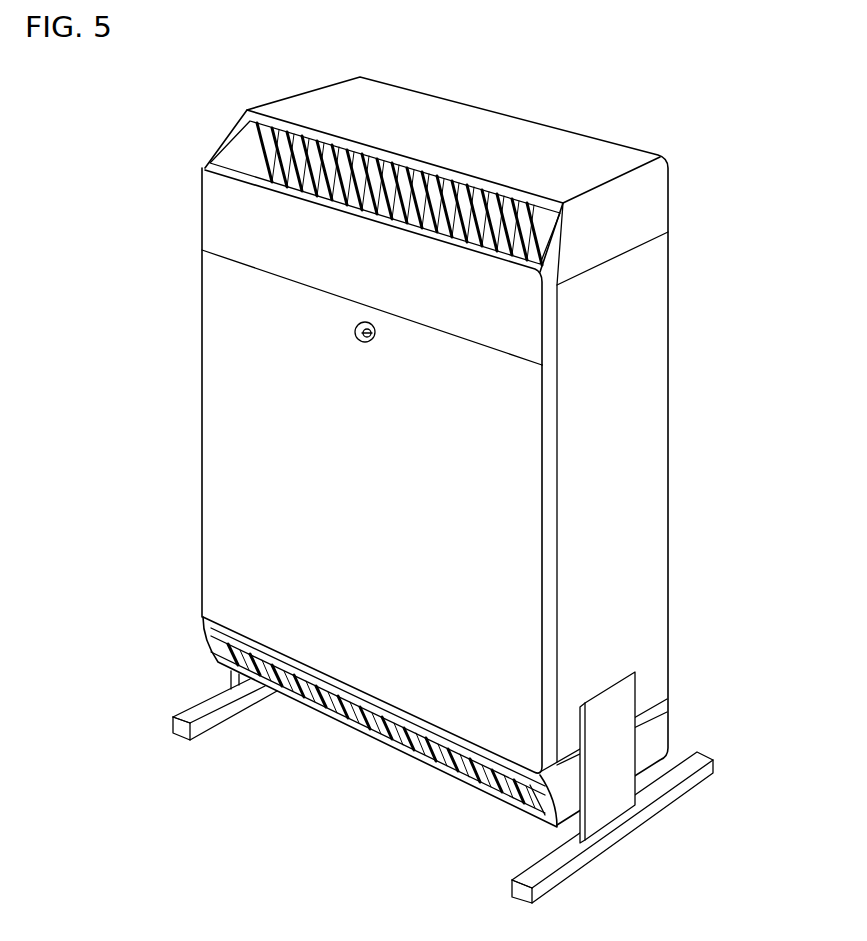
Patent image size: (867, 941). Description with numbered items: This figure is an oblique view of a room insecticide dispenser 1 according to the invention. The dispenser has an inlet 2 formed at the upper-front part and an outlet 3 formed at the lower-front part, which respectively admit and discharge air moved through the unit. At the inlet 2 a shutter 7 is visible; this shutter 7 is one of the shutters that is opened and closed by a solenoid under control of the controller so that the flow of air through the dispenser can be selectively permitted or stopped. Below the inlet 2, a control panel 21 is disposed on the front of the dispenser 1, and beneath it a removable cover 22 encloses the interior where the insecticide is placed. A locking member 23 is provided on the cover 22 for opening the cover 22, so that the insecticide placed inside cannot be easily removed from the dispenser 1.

The room insecticide dispenser 1 is at (436, 484).
The inlet 2 is at (363, 169).
The shutter 7 is at (243, 130).
The control panel 21 is at (210, 210).
The removable cover 22 is at (337, 547).
The locking member 23 is at (358, 345).
The outlet 3 is at (353, 720).